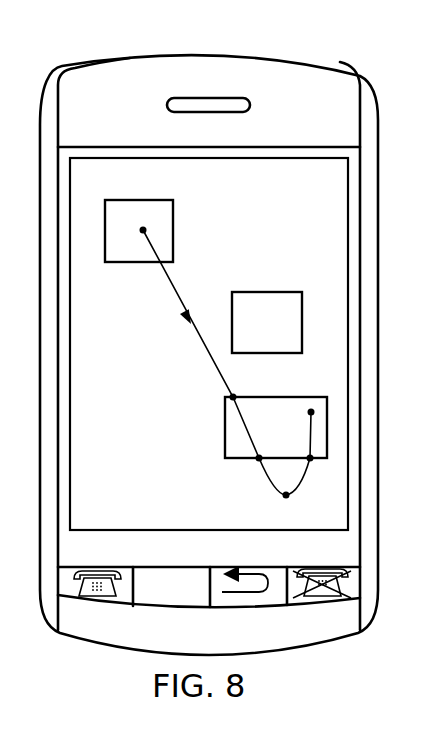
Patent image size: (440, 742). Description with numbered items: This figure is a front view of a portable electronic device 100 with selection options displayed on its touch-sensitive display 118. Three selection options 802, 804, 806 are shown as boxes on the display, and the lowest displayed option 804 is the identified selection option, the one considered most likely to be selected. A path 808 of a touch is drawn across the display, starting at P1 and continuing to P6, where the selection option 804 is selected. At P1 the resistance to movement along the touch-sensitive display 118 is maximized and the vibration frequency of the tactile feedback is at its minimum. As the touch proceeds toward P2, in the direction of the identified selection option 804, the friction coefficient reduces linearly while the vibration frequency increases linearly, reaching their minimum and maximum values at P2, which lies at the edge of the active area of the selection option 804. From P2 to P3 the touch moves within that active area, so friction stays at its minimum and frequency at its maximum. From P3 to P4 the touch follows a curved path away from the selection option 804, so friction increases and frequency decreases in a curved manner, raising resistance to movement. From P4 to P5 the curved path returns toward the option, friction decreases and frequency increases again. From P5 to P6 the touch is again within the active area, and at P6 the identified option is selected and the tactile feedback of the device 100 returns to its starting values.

The portable electronic device 100 is at (368, 85).
The touch-sensitive display 118 is at (334, 198).
The selection option 802 is at (173, 240).
The selection option 804 is at (225, 443).
The selection option 806 is at (250, 290).
The path 808 is at (180, 295).
The touch start point P1 is at (130, 230).
The touch point at active area edge P2 is at (243, 386).
The touch point leaving active area P3 is at (250, 472).
The touch point of curved path P4 is at (286, 509).
The touch point re-entering active area P5 is at (321, 472).
The touch end point P6 is at (298, 412).